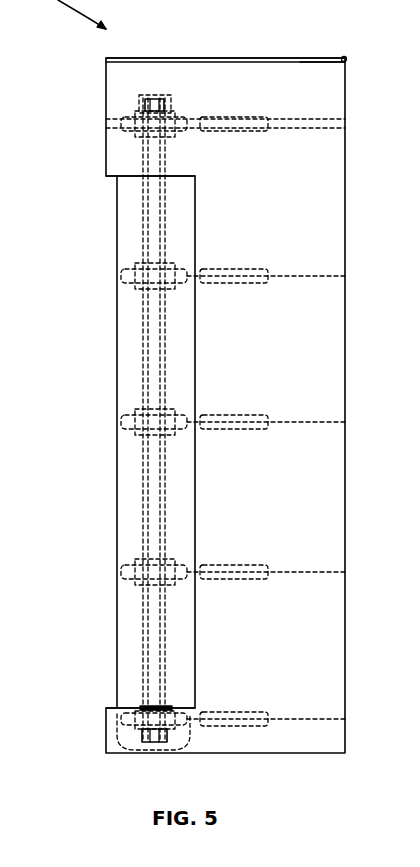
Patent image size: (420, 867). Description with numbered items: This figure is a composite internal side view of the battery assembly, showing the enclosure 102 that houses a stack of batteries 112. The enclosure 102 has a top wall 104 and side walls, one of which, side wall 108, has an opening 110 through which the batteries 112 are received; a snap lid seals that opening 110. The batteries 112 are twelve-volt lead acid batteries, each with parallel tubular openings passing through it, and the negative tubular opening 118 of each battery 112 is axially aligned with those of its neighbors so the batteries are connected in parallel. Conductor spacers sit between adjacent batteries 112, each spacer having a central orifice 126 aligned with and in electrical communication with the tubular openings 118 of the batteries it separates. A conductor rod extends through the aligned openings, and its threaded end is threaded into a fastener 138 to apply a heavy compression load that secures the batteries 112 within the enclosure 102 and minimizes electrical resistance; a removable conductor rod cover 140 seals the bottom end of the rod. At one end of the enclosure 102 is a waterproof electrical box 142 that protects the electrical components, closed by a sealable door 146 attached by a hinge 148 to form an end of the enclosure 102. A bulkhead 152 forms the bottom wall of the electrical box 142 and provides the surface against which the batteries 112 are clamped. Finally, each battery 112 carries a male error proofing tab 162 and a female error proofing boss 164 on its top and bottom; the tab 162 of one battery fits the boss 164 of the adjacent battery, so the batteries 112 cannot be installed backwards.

The enclosure 102 is at (347, 392).
The top wall 104 is at (193, 58).
The side wall 108 is at (105, 163).
The opening 110 is at (108, 708).
The battery 112 is at (128, 213).
The negative tubular opening 118 is at (165, 210).
The central orifice 126 is at (145, 122).
The fastener 138 is at (140, 103).
The removable conductor rod cover 140 is at (185, 750).
The waterproof electrical box 142 is at (322, 74).
The sealable door 146 is at (280, 58).
The hinge 148 is at (347, 58).
The bulkhead 152 is at (321, 126).
The male error proofing tab 162 is at (255, 117).
The female error proofing boss 164 is at (238, 132).